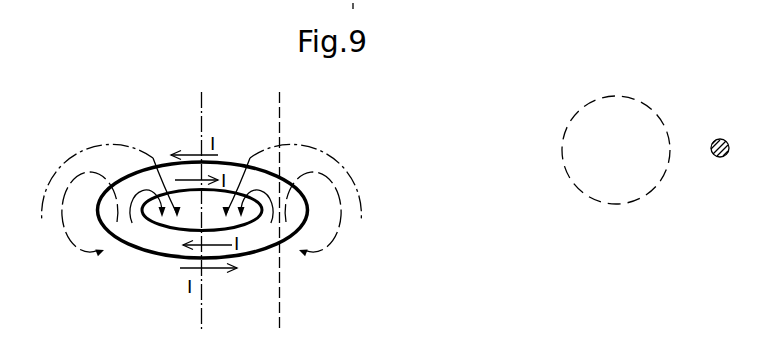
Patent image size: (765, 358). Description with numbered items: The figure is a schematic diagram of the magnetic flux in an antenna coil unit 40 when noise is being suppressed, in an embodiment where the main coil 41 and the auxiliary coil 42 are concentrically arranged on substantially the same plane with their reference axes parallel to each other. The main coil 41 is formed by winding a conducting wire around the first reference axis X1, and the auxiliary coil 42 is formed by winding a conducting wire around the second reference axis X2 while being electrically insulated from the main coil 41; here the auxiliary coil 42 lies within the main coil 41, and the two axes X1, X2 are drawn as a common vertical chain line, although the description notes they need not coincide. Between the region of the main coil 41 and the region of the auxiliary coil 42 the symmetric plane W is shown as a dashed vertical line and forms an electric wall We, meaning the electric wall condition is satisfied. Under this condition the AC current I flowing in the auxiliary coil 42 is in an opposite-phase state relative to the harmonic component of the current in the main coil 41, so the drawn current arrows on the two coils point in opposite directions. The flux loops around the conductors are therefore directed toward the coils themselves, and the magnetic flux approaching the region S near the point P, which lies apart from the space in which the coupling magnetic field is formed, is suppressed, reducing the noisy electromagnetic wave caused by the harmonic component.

The antenna coil unit 40 is at (171, 244).
The main coil 41 is at (139, 258).
The auxiliary coil 42 is at (171, 233).
The first reference axis X1 is at (185, 196).
The second reference axis X2 is at (200, 133).
The electric wall We is at (344, 211).
The symmetric plane W is at (281, 113).
The region S is at (617, 95).
The point P is at (720, 138).